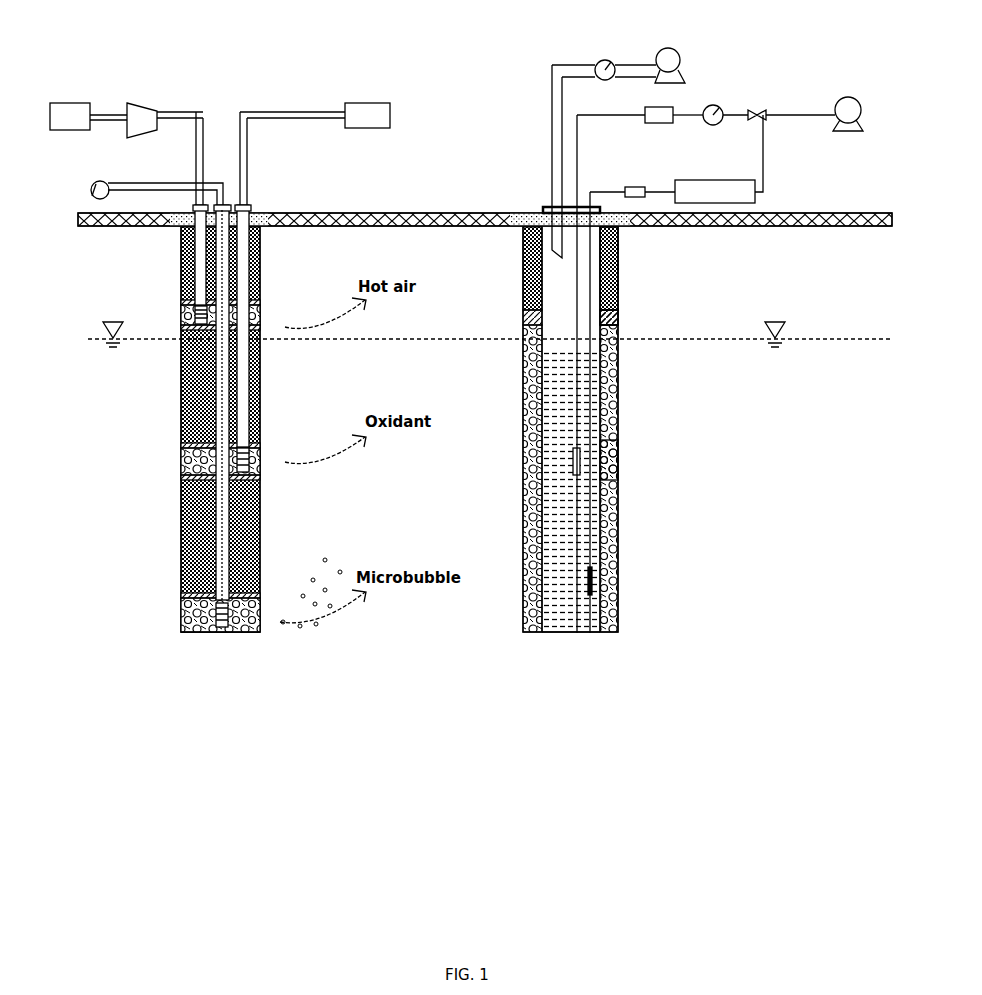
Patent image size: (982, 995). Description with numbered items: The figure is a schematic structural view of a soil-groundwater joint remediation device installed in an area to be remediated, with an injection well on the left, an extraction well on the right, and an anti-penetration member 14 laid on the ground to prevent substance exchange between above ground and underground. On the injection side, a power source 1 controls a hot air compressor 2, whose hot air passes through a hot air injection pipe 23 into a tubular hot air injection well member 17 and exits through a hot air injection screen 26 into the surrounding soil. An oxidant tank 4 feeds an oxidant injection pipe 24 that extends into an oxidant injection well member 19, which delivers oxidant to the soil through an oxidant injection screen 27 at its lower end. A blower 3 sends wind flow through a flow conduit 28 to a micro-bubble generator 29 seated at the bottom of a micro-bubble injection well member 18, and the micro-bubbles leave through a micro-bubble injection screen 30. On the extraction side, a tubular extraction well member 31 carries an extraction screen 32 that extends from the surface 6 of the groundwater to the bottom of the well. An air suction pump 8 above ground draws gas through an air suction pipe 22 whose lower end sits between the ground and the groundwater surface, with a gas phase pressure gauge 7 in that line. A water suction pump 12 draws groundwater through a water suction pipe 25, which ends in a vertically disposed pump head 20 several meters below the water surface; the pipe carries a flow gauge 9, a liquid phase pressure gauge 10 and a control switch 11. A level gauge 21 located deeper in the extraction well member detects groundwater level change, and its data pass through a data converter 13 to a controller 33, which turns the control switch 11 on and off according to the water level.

The power source 1 is at (50, 103).
The hot air compressor 2 is at (127, 104).
The blower 3 is at (91, 194).
The oxidant tank 4 is at (390, 103).
The surface of groundwater 6 is at (88, 339).
The gas phase pressure gauge 7 is at (612, 62).
The air suction pump 8 is at (680, 52).
The flow gauge 9 is at (673, 107).
The liquid phase pressure gauge 10 is at (718, 110).
The control switch 11 is at (762, 110).
The water suction pump 12 is at (860, 103).
The data converter 13 is at (640, 187).
The anti-penetration member 14 is at (890, 213).
The hot air injection well member 17 is at (200, 287).
The micro-bubble injection well member 18 is at (215, 578).
The oxidant injection well member 19 is at (248, 425).
The pump head 20 is at (583, 462).
The level gauge 21 is at (595, 583).
The air suction pipe 22 is at (540, 245).
The hot air injection pipe 23 is at (197, 158).
The oxidant injection pipe 24 is at (247, 165).
The water suction pipe 25 is at (570, 280).
The hot air injection screen 26 is at (186, 310).
The oxidant injection screen 27 is at (255, 475).
The flow conduit 28 is at (150, 183).
The micro-bubble generator 29 is at (195, 608).
The micro-bubble injection screen 30 is at (223, 627).
The extraction well member 31 is at (605, 345).
The extraction screen 32 is at (575, 622).
The controller 33 is at (712, 182).